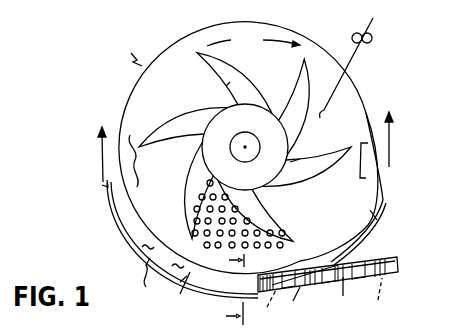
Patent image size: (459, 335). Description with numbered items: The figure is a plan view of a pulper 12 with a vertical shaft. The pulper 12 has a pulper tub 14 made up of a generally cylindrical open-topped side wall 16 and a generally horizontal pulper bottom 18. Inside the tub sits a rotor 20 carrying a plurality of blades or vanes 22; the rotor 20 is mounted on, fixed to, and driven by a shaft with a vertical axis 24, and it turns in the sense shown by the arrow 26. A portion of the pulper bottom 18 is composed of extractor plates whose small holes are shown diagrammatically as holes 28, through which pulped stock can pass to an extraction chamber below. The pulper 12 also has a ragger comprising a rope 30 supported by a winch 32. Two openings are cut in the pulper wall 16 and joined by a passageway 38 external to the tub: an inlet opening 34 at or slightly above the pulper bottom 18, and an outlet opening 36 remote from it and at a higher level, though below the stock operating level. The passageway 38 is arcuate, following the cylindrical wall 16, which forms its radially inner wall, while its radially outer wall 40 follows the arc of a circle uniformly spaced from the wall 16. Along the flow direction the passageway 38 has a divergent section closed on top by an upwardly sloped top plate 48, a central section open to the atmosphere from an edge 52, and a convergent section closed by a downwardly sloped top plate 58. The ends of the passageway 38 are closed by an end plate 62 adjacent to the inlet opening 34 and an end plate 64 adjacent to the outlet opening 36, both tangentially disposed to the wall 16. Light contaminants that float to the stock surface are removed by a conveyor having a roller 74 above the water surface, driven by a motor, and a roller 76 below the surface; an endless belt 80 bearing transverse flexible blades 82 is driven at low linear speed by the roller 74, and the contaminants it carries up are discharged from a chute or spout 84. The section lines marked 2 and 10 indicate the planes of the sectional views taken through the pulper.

The section line 2- 2 is at (245, 137).
The section line 10- 10 is at (225, 288).
The pulper 12 is at (129, 51).
The pulper tub 14 is at (180, 81).
The side wall 16 is at (208, 27).
The pulper bottom 18 is at (245, 147).
The rotor 20 is at (288, 161).
The blades or vanes 22 is at (219, 100).
The vertical axis 24 is at (248, 134).
The arrow 26 is at (253, 37).
The holes 28 is at (258, 230).
The rope 30 is at (356, 65).
The winch 32 is at (373, 36).
The inlet opening 34 is at (360, 158).
The outlet opening 36 is at (135, 152).
The passageway 38 is at (163, 257).
The radially outer wall 40 is at (150, 282).
The top plate 48 is at (373, 217).
The edge 52 is at (179, 294).
The top plate 58 is at (130, 220).
The end plate 62 is at (382, 182).
The end plate 64 is at (95, 186).
The roller 74 is at (383, 299).
The roller 76 is at (265, 309).
The endless belt 80 is at (343, 296).
The transverse flexible blades 82 is at (289, 304).
The chute or spout 84 is at (400, 266).